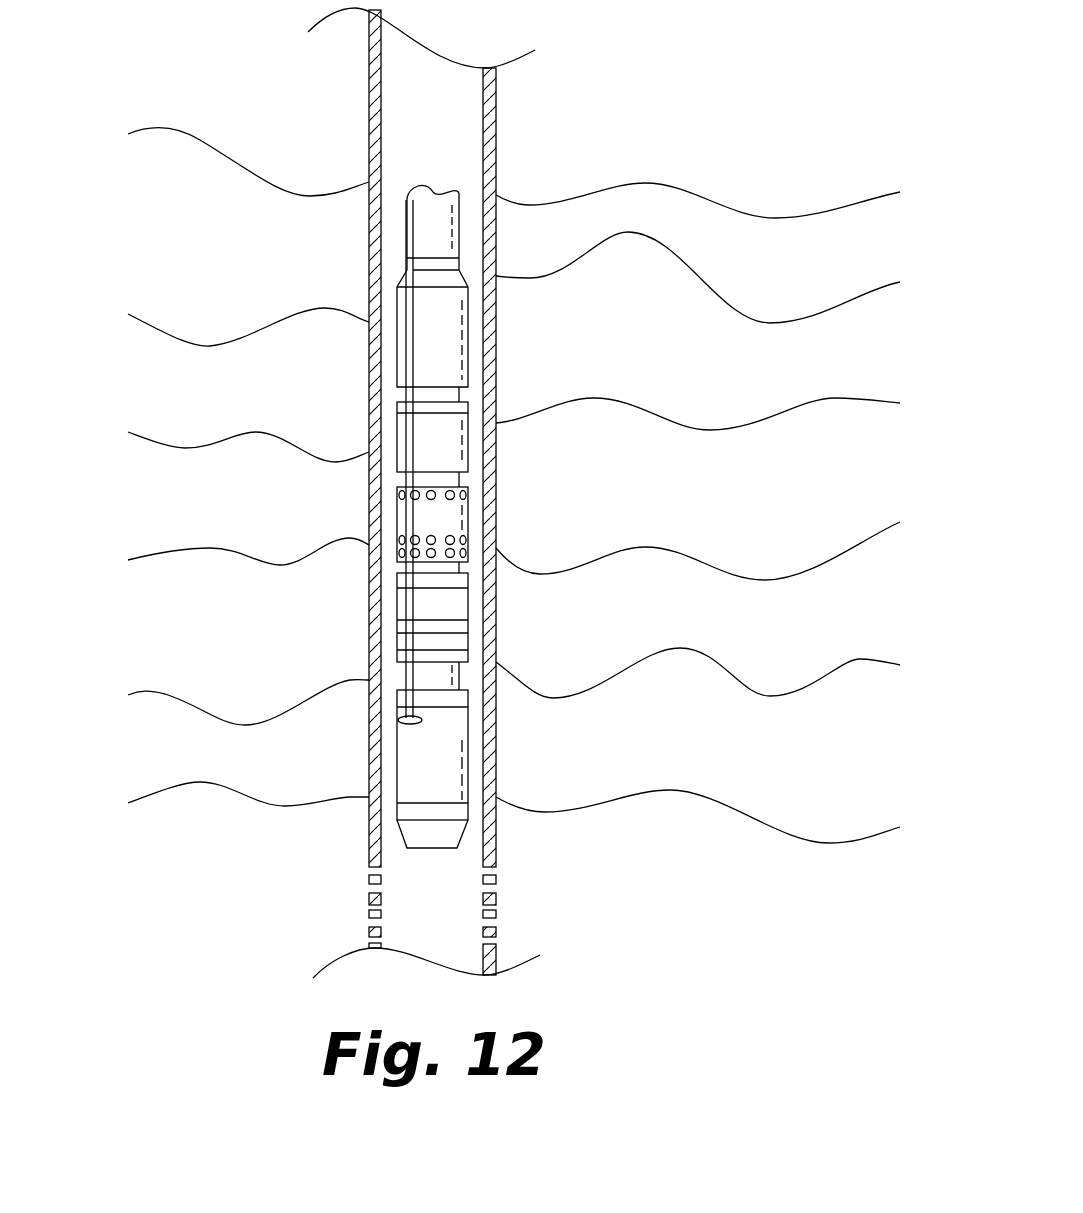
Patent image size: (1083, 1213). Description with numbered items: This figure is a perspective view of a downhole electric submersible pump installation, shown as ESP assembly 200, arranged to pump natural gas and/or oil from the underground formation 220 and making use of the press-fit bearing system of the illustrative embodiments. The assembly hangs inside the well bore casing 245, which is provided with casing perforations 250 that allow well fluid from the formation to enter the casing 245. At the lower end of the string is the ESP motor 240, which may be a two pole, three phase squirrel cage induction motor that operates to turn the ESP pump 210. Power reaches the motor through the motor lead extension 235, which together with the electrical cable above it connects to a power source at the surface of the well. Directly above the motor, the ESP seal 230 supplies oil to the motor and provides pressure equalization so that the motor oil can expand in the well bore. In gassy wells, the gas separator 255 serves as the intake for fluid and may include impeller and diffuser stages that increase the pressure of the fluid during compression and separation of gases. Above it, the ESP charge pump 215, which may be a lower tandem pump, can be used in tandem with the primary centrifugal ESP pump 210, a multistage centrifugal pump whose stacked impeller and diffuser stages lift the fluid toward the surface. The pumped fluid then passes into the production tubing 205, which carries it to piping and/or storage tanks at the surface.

The ESP assembly 200 is at (543, 145).
The production tubing 205 is at (410, 240).
The ESP pump 210 is at (470, 330).
The ESP charge pump 215 is at (470, 443).
The underground formation 220 is at (264, 512).
The ESP seal 230 is at (470, 605).
The motor lead extension 235 is at (405, 678).
The ESP motor 240 is at (470, 740).
The well bore casing 245 is at (369, 811).
The casing perforations 250 is at (498, 877).
The gas separator 255 is at (470, 508).